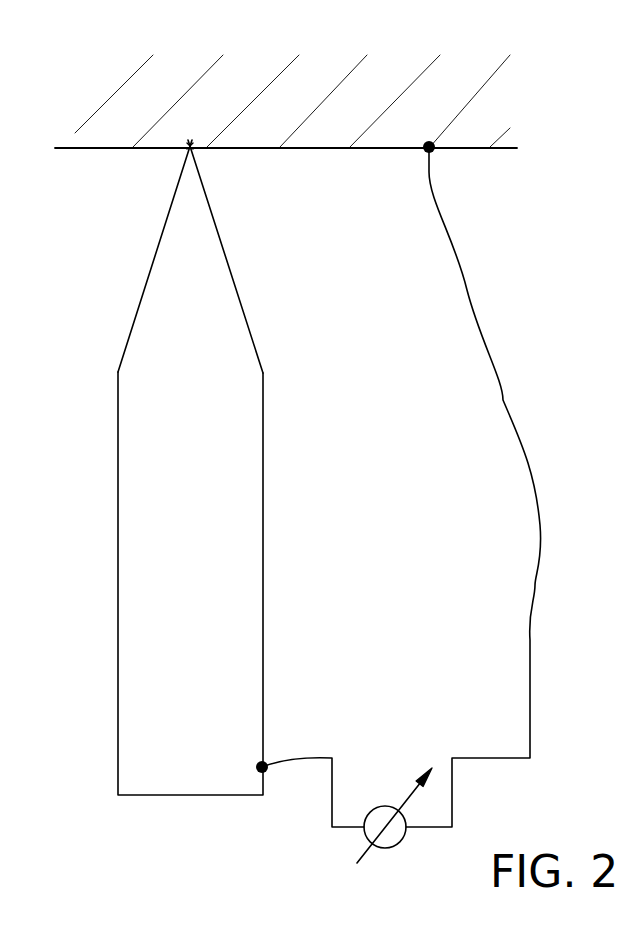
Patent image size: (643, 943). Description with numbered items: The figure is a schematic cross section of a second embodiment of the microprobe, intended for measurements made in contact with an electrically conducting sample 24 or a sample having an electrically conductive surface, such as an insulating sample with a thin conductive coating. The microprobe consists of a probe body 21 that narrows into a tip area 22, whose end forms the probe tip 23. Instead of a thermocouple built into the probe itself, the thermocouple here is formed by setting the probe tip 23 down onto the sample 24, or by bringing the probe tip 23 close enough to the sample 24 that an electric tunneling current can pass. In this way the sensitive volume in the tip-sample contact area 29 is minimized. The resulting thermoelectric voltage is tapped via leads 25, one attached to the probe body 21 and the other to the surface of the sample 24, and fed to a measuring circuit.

The probe body 21 is at (183, 555).
The tip area 22 is at (177, 310).
The probe tip 23 is at (157, 183).
The sample 24 is at (352, 57).
The leads 25 is at (318, 758).
The tip-sample contact area 29 is at (190, 146).